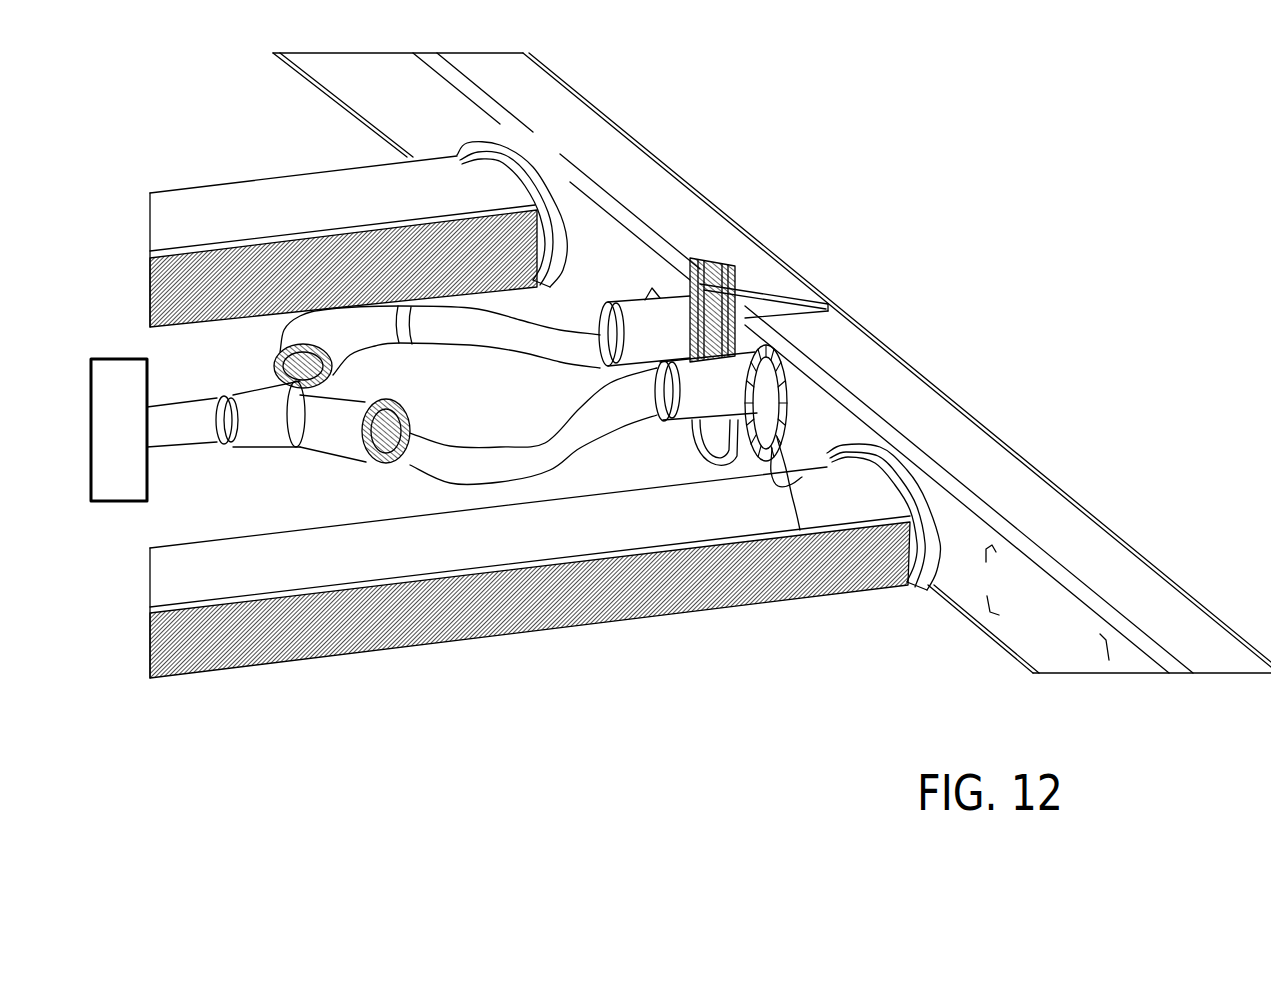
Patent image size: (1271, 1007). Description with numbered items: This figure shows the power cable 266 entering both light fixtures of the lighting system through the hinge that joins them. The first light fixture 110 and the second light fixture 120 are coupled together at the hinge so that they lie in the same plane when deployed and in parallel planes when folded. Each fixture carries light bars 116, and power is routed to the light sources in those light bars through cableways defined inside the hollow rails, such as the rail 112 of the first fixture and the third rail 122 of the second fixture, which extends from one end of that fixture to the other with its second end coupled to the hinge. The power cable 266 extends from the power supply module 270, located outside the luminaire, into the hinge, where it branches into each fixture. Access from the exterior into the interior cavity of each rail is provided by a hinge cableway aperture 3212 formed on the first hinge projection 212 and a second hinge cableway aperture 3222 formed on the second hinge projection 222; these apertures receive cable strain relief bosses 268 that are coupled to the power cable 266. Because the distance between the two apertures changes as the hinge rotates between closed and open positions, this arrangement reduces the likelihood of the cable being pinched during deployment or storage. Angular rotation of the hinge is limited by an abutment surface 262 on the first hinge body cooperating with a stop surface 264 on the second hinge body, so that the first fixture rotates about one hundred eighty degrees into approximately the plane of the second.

The first light fixture 110 is at (1049, 467).
The rail 112 is at (912, 394).
The light bars 116 is at (190, 189).
The second light fixture 120 is at (624, 121).
The third rail 122 is at (536, 80).
The projection 212 is at (837, 593).
The projection 222 is at (693, 340).
The abutment surface 262 is at (778, 266).
The stop surface 264 is at (797, 297).
The power cable 266 is at (321, 425).
The cable strain relief bosses 268 is at (485, 386).
The power supply module 270 is at (140, 503).
The hinge cableway aperture 3212 is at (775, 388).
The hinge cableway aperture 3222 is at (715, 340).